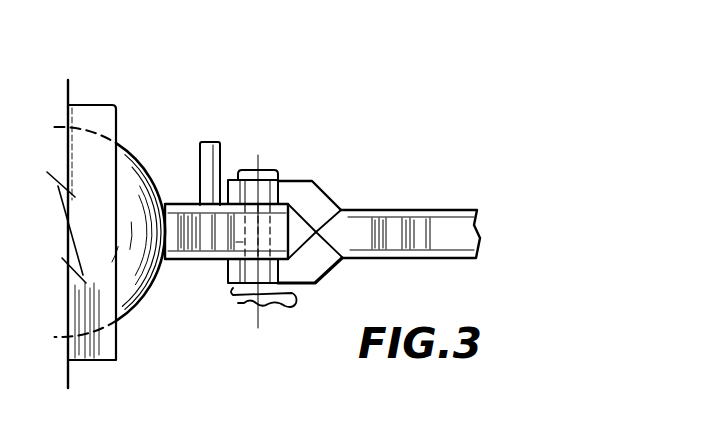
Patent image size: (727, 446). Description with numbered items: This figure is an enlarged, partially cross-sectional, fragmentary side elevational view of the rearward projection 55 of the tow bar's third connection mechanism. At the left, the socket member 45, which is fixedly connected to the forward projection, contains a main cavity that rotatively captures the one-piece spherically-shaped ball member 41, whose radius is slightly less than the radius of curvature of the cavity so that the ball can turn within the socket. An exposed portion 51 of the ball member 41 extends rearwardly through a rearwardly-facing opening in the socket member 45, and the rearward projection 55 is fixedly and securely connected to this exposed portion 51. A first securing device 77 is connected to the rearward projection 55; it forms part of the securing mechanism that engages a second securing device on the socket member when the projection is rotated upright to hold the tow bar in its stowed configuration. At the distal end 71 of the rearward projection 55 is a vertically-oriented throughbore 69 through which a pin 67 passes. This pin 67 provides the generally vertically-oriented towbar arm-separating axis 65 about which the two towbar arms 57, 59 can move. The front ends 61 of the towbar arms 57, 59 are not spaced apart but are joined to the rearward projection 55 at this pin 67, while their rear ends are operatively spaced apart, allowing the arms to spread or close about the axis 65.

The socket member 45 is at (85, 98).
The exposed portion 51 is at (130, 172).
The ball member 41 is at (155, 150).
The first securing device 77 is at (203, 141).
The rearward projection 55 is at (177, 250).
The throughbore 69 is at (228, 245).
The towbar arm-separating axis 65 is at (257, 155).
The pin 67 is at (275, 180).
The towbar arm 57 is at (313, 200).
The towbar arm 59 is at (450, 227).
The front end 61 is at (350, 227).
The distal end 71 is at (320, 275).